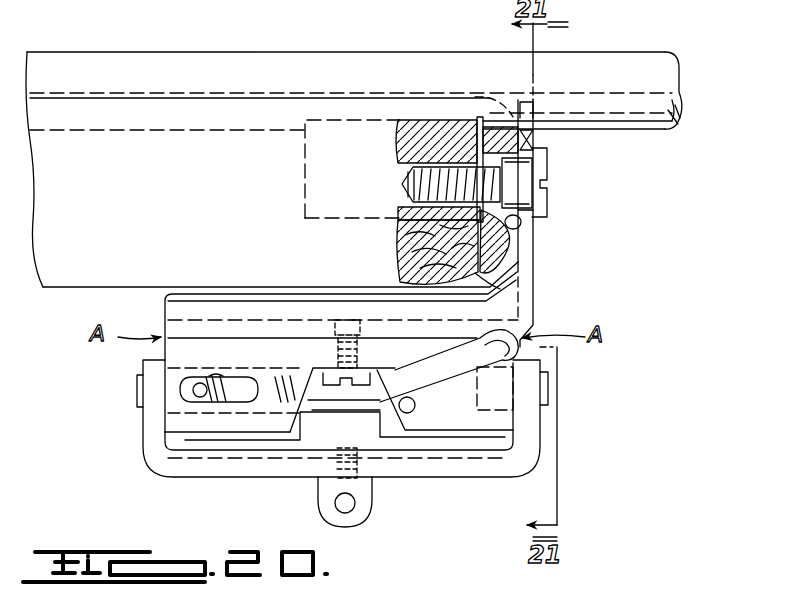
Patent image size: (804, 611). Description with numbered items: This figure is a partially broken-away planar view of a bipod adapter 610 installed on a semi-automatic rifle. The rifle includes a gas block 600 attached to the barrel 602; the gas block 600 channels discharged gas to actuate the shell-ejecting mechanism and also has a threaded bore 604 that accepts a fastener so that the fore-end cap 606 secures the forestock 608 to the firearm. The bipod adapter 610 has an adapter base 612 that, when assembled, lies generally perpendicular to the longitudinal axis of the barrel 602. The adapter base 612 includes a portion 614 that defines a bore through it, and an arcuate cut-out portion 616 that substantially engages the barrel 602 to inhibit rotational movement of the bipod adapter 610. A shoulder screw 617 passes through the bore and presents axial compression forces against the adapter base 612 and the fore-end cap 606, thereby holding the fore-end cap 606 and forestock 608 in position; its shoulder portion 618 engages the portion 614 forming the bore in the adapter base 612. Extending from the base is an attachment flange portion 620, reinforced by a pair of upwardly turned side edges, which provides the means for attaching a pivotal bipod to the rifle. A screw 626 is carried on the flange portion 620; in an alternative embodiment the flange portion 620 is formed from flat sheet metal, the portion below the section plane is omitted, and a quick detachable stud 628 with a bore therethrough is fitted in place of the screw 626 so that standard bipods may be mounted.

The gas block 600 is at (434, 123).
The barrel 602 is at (637, 51).
The threaded bore 604 is at (412, 184).
The fore-end cap 606 is at (519, 247).
The forestock 608 is at (500, 289).
The bipod adapter 610 is at (539, 318).
The adapter base 612 is at (533, 270).
The portion defining a bore 614 is at (528, 158).
The arcuate cut-out portion 616 is at (522, 130).
The shoulder screw 617 is at (516, 183).
The shoulder portion 618 is at (520, 229).
The attachment flange portion 620 is at (163, 313).
The screw 626 is at (336, 386).
The quick detachable stud 628 is at (365, 506).